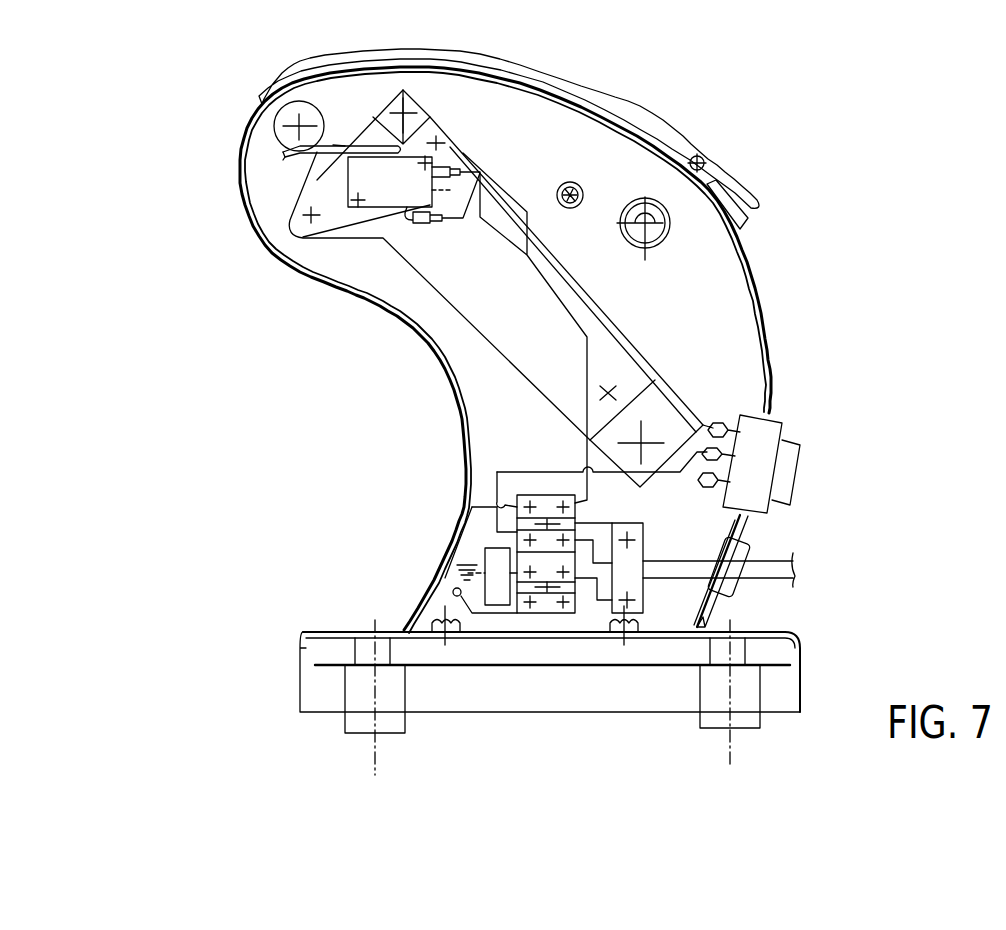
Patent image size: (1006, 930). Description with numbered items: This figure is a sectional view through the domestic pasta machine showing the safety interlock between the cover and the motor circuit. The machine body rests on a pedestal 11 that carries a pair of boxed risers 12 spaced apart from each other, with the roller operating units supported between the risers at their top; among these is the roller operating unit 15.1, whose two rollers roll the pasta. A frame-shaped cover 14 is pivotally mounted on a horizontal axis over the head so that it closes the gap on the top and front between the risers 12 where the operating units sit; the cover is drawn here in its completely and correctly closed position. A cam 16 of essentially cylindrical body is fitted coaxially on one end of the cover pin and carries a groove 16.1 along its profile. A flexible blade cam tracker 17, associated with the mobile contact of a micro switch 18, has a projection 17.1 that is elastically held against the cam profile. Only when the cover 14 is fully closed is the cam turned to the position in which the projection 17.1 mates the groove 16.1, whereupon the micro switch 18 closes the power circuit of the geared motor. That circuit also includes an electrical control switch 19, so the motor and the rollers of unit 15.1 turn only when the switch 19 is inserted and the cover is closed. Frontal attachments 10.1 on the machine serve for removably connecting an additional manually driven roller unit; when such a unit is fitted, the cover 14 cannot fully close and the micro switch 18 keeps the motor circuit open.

The frontal attachments 10.1 is at (745, 235).
The pedestal 11 is at (800, 660).
The boxed risers 12 is at (496, 296).
The cover 14 is at (678, 118).
The roller operating unit 15.1 is at (633, 260).
The cam 16 is at (277, 122).
The groove 16.1 is at (333, 145).
The cam tracker 17 is at (313, 150).
The projection 17.1 is at (283, 155).
The micro switch 18 is at (414, 189).
The electrical control switch 19 is at (775, 470).